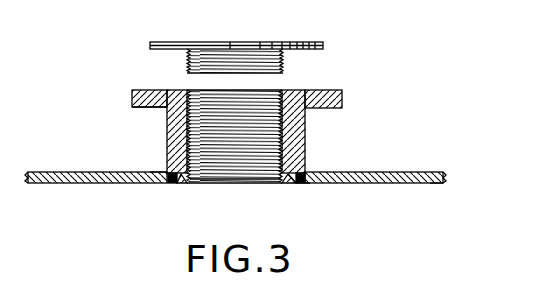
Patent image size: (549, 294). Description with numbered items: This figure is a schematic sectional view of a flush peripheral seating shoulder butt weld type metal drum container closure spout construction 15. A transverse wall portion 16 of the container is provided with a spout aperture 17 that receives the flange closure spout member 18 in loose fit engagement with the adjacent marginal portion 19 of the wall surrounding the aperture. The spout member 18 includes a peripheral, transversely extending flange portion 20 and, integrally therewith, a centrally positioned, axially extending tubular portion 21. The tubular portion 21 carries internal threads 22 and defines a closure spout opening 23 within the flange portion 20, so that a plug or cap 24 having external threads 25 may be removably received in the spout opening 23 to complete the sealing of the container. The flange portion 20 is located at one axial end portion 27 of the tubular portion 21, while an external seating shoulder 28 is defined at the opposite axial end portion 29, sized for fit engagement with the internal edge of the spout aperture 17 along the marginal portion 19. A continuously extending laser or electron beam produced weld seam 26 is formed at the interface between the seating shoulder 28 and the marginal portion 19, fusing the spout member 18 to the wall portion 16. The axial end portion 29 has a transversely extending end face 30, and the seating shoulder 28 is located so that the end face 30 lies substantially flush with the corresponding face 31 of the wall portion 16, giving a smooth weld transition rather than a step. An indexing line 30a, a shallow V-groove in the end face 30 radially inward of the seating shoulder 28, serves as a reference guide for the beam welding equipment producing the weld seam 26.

The closure spout construction 15 is at (351, 72).
The transverse wall portion 16 is at (98, 184).
The spout aperture 17 is at (313, 174).
The flange closure spout member 18 is at (305, 108).
The marginal portion 19 is at (164, 172).
The flange portion 20 is at (342, 90).
The tubular portion 21 is at (178, 104).
The internal threads 22 is at (272, 180).
The closure spout opening 23 is at (268, 100).
The plug or cap 24 is at (192, 48).
The external threads 25 is at (291, 47).
The weld seam 26 is at (300, 183).
The axial end portion 27 is at (167, 109).
The seating shoulder 28 is at (191, 186).
The axial end portion 29 is at (305, 166).
The end face 30 is at (290, 182).
The indexing line 30a is at (296, 184).
The face of the container wall portion 31 is at (443, 184).